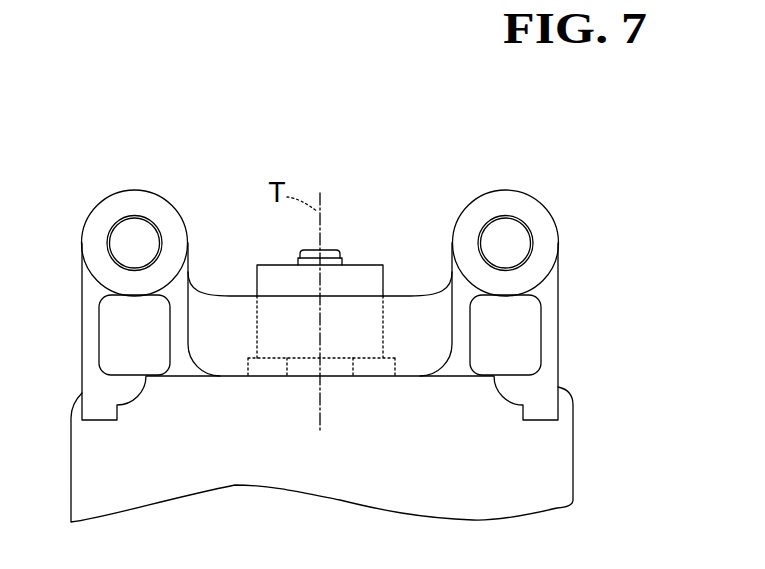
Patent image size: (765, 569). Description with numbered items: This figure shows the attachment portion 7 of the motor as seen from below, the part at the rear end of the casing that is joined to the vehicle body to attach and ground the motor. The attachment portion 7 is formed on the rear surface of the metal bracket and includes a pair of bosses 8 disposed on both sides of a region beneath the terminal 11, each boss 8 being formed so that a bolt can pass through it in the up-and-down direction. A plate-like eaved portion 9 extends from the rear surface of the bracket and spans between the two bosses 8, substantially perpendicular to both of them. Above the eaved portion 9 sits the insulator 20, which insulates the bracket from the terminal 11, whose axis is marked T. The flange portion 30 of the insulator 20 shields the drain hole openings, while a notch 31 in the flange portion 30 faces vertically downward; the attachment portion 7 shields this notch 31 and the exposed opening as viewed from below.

The attachment portion 7 is at (522, 185).
The bosses 8 is at (103, 200).
The eaved portion 9 is at (237, 296).
The terminal 11 is at (332, 250).
The insulator 20 is at (384, 263).
The flange portion 30 is at (246, 362).
The notch 31 is at (298, 370).